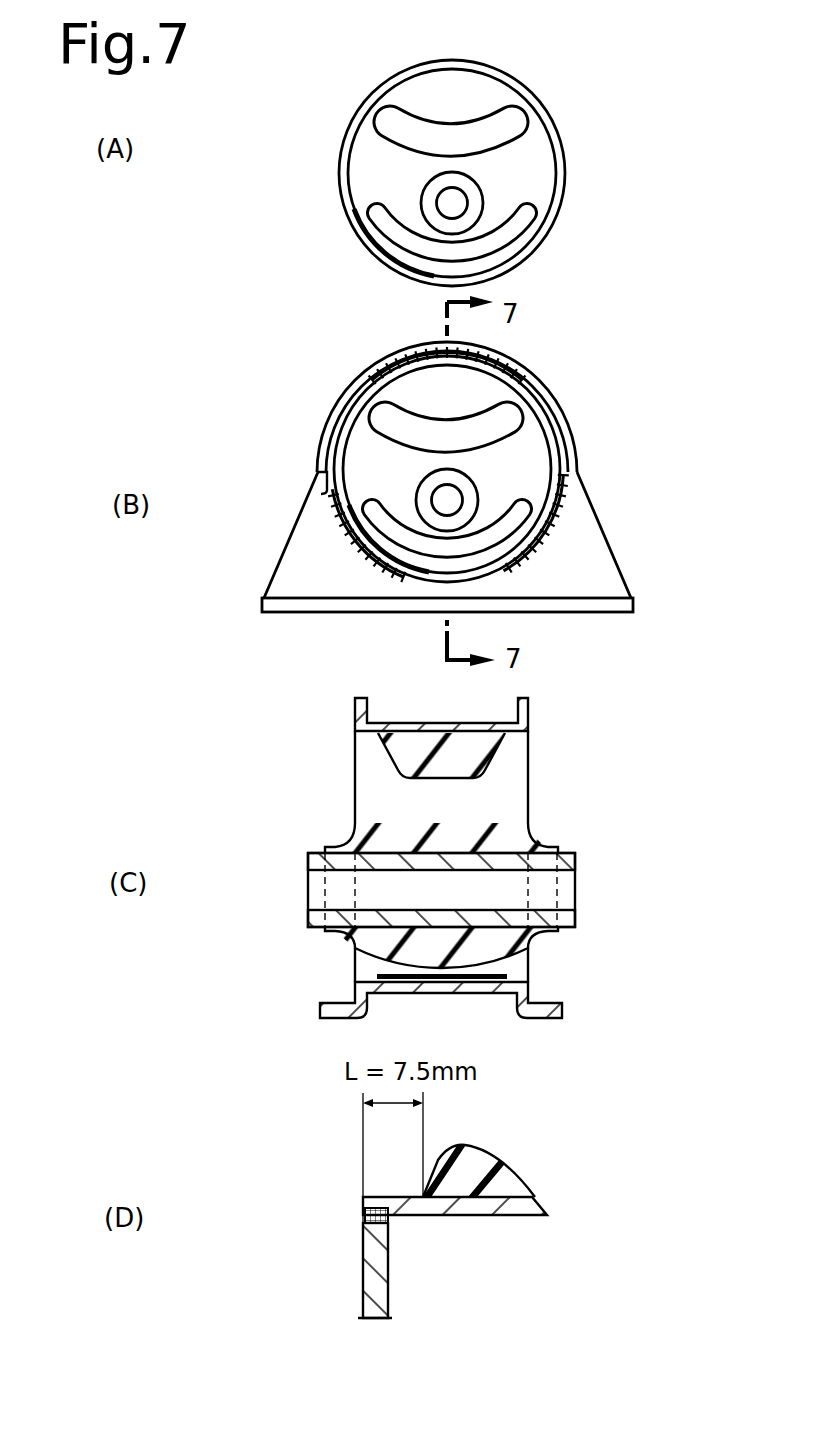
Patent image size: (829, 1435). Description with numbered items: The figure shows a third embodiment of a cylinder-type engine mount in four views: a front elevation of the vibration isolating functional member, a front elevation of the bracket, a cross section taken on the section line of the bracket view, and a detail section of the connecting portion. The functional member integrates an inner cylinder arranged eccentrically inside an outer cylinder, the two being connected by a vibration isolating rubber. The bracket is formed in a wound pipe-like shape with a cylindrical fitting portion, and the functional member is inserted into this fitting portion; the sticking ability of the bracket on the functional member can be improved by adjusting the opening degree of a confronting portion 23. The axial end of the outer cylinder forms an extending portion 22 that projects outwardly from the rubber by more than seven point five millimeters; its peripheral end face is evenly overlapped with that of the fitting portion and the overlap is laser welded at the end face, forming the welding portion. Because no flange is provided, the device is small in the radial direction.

The extending portion 22 is at (383, 1196).
The confronting portion 23 is at (322, 492).